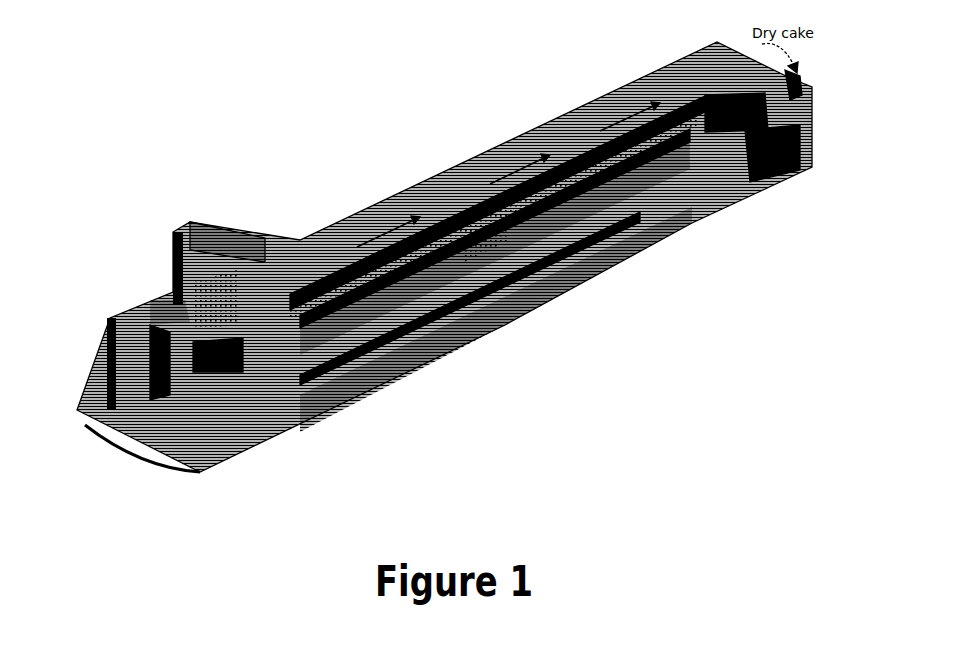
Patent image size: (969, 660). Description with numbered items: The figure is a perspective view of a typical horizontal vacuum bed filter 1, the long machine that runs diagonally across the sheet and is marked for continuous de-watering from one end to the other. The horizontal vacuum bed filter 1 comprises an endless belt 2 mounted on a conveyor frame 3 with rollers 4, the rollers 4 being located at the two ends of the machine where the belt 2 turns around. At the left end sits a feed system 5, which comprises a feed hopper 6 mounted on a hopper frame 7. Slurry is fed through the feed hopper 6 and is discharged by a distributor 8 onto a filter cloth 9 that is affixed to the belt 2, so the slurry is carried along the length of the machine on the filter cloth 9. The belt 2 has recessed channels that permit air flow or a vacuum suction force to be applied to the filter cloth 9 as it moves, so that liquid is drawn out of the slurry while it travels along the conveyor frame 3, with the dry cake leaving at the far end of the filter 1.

The horizontal vacuum bed filter 1 is at (441, 110).
The endless belt 2 is at (606, 135).
The conveyor frame 3 is at (522, 278).
The rollers 4 is at (185, 312).
The feed system 5 is at (199, 242).
The feed hopper 6 is at (262, 262).
The hopper frame 7 is at (170, 275).
The distributor 8 is at (258, 330).
The filter cloth 9 is at (338, 275).